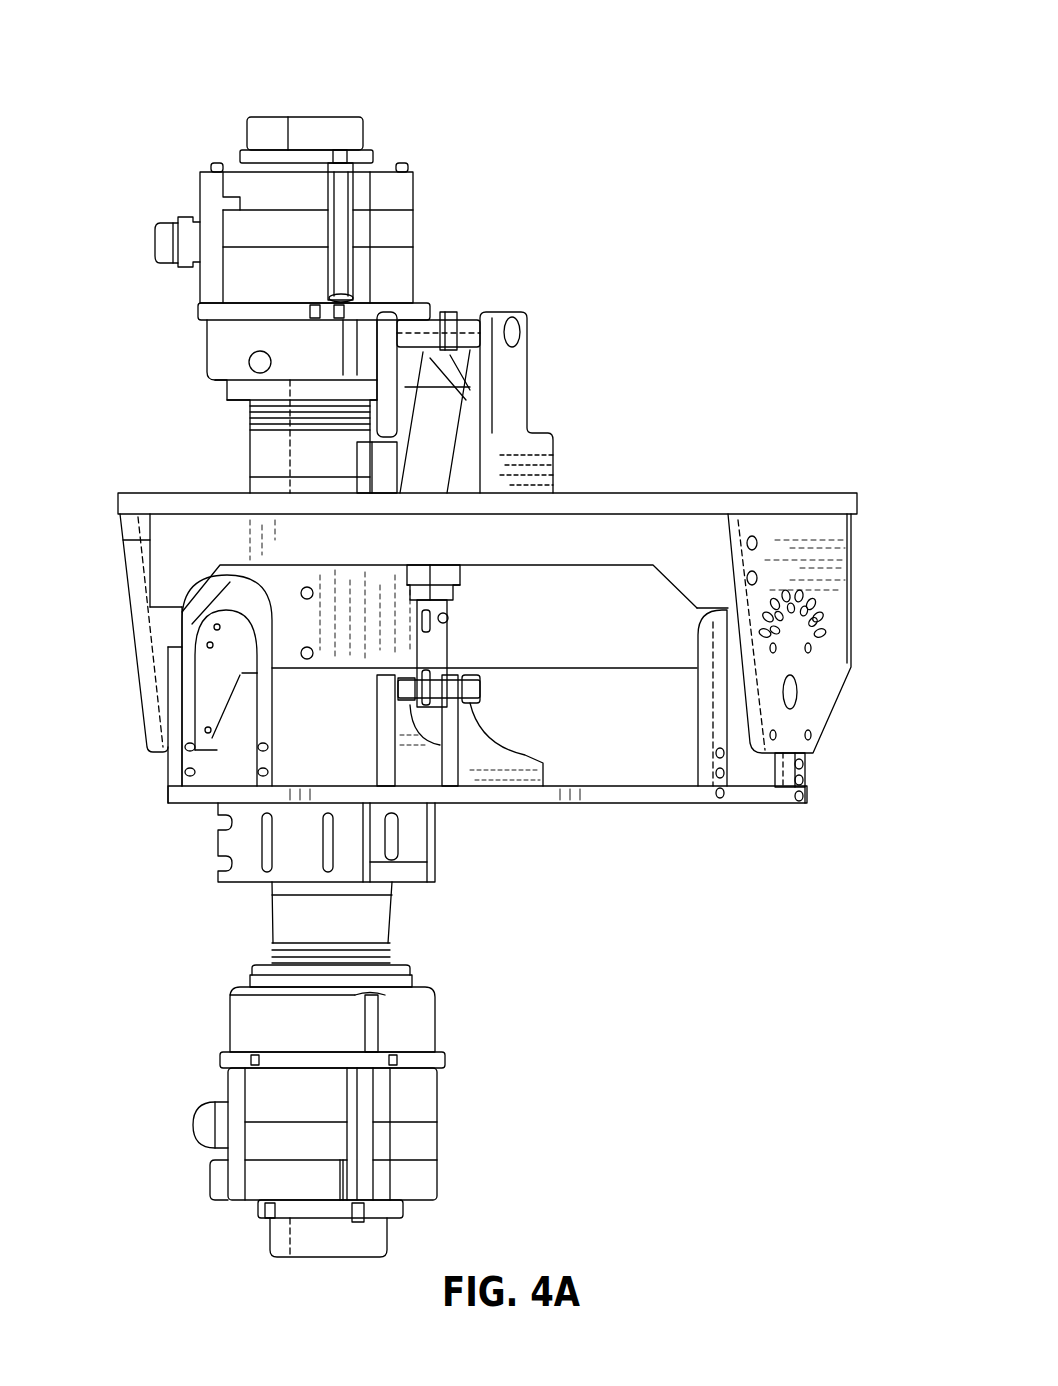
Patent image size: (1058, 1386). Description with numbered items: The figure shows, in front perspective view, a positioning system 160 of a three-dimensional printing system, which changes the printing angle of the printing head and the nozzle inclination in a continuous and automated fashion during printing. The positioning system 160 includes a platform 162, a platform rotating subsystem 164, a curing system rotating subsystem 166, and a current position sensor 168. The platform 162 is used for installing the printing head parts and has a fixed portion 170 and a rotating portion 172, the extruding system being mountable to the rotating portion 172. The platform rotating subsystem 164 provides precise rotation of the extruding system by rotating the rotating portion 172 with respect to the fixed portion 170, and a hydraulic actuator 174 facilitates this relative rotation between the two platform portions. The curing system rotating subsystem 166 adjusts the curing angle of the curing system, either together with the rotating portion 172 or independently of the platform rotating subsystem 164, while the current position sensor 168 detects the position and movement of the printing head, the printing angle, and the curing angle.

The positioning system 160 is at (100, 103).
The platform 162 is at (702, 540).
The platform rotating subsystem 164 is at (287, 232).
The curing system rotating subsystem 166 is at (265, 1116).
The current position sensor 168 is at (437, 442).
The fixed portion 170 is at (828, 675).
The rotating portion 172 is at (807, 806).
The hydraulic actuator 174 is at (438, 643).